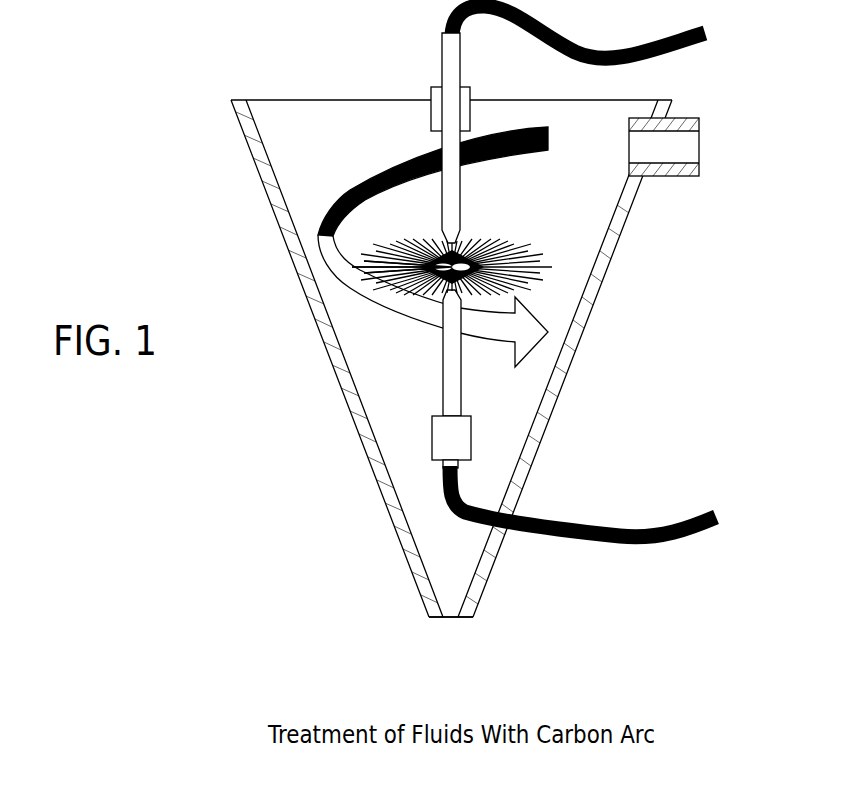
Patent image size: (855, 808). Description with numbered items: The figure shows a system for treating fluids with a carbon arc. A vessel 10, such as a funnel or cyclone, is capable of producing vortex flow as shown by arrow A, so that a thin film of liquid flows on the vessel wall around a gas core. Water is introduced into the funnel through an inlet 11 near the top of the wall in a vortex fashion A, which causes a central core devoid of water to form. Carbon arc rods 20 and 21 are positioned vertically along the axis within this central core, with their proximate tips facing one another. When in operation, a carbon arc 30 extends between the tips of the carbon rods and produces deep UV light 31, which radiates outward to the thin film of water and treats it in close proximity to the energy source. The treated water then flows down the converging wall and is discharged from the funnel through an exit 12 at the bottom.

The vessel 10 is at (538, 433).
The inlet 11 is at (687, 178).
The exit 12 is at (453, 596).
The carbon arc rod 20 is at (442, 53).
The carbon arc rod 21 is at (452, 386).
The carbon arc 30 is at (466, 255).
The UV light 31 is at (393, 267).
The vortex flow A is at (525, 332).